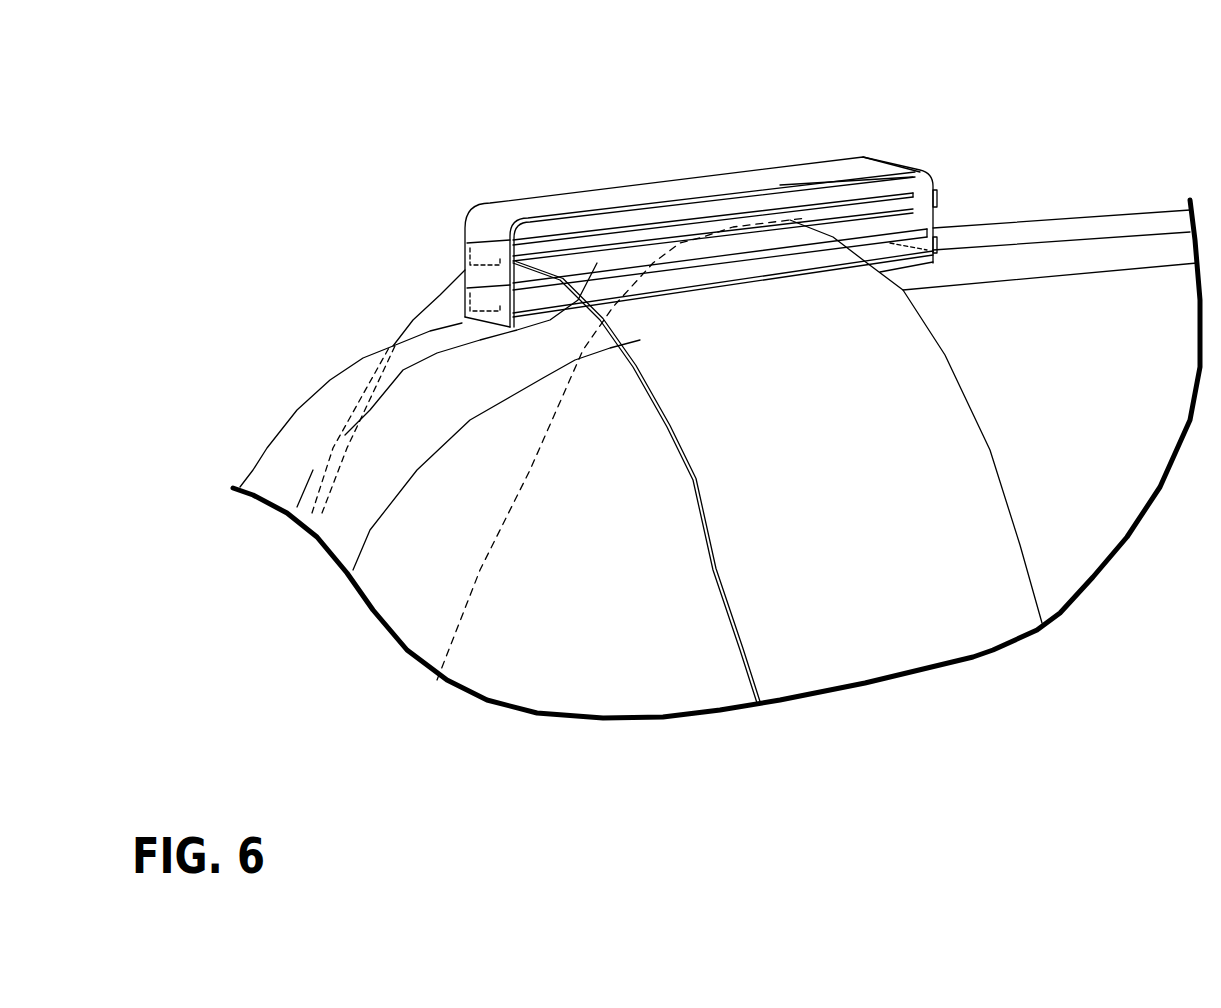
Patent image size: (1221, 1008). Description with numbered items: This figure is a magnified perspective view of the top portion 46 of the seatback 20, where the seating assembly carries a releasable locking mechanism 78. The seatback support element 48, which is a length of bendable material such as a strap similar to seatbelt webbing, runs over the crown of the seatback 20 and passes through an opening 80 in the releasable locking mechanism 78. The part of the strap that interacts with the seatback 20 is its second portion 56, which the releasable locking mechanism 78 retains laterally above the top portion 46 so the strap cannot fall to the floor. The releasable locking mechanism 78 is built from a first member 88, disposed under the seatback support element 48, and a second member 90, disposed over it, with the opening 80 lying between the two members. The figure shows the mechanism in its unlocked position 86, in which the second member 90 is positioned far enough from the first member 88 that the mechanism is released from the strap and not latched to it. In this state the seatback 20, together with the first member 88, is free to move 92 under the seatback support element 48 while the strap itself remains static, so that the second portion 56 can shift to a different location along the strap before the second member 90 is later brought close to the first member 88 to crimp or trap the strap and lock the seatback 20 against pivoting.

The seatback 20 is at (676, 459).
The top portion 46 is at (463, 323).
The seatback support element 48 is at (713, 565).
The second portion 56 is at (396, 349).
The releasable locking mechanism 78 is at (956, 248).
The opening 80 is at (862, 222).
The unlocked position 86 is at (425, 240).
The first member 88 is at (933, 248).
The second member 90 is at (910, 197).
The movement 92 is at (557, 128).